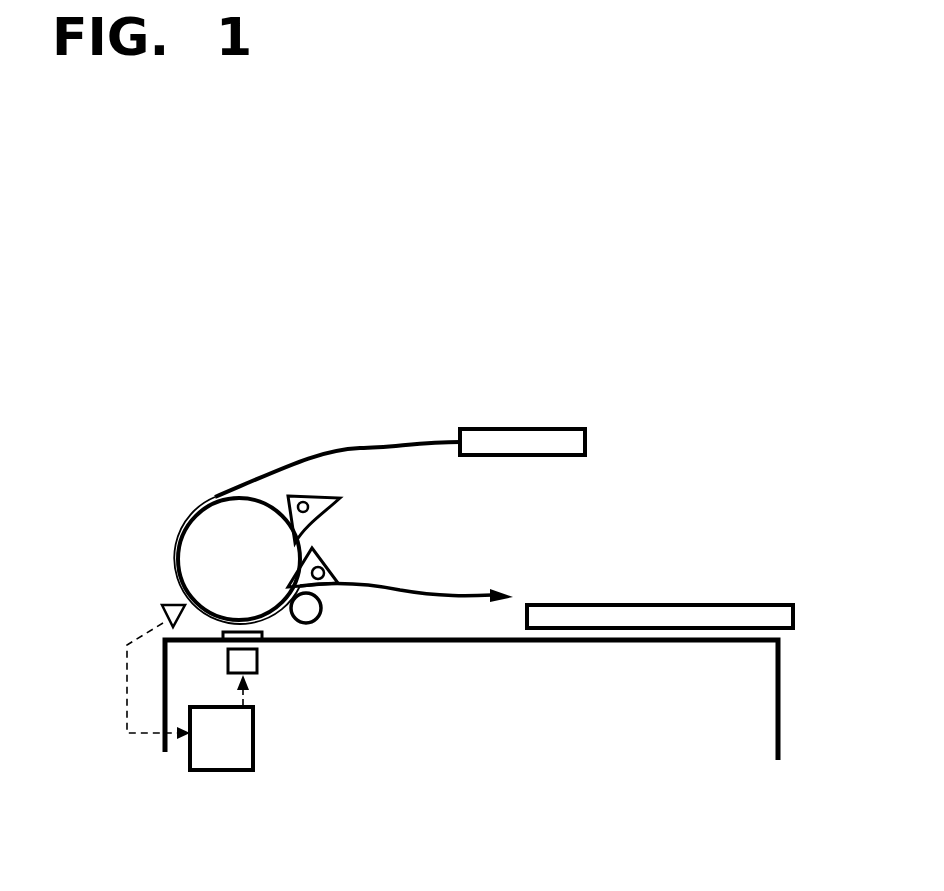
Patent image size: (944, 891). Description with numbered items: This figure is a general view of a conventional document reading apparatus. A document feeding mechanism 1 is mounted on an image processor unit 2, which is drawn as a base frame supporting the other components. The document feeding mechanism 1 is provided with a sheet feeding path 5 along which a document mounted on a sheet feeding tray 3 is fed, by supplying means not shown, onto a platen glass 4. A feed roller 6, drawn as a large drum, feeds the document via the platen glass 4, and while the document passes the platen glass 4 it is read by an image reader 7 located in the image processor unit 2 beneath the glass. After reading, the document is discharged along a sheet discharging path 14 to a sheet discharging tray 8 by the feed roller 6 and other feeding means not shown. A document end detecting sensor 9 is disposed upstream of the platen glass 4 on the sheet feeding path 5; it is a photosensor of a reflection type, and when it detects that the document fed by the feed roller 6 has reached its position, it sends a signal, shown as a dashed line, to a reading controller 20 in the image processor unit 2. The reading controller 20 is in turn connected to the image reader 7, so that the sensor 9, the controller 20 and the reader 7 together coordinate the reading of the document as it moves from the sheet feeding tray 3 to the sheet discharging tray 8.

The document feeding mechanism 1 is at (574, 372).
The image processor unit 2 is at (767, 677).
The sheet feeding tray 3 is at (573, 442).
The platen glass 4 is at (218, 635).
The sheet feeding path 5 is at (353, 448).
The feed roller 6 is at (227, 520).
The image reader 7 is at (248, 663).
The sheet discharging tray 8 is at (720, 612).
The document end detecting sensor 9 is at (168, 603).
The sheet discharging path 14 is at (447, 593).
The reading controller 20 is at (222, 757).